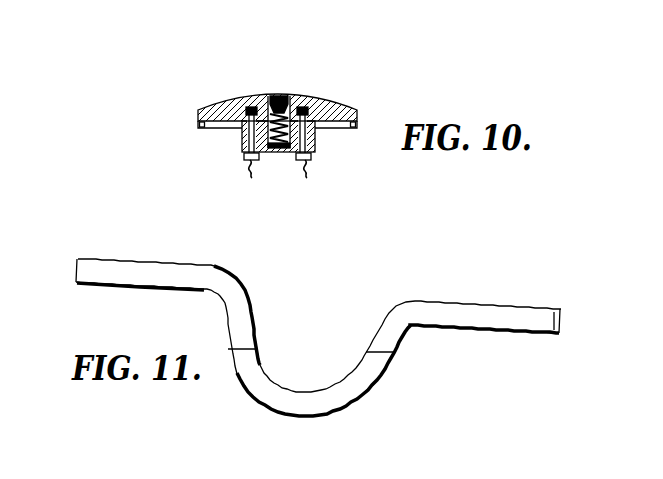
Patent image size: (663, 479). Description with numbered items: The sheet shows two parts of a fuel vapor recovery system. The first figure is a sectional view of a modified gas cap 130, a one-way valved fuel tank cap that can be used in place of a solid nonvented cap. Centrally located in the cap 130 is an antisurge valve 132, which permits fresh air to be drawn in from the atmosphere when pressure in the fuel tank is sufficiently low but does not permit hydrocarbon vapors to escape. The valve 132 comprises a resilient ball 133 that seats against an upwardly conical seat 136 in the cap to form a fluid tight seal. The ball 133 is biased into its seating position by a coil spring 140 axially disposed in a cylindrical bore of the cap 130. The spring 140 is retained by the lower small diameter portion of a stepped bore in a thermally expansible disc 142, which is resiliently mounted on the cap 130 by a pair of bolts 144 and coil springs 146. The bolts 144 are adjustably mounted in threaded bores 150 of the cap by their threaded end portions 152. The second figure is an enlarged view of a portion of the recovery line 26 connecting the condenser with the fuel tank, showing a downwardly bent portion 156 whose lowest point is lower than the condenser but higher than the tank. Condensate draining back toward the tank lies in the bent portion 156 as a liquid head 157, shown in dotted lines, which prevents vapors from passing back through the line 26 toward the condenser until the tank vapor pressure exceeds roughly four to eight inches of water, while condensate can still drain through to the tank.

In FIG. 11, the recovery line 26 is at (517, 303).
In FIG. 10, the gas cap 130 is at (312, 95).
In FIG. 10, the antisurge valve 132 is at (277, 91).
In FIG. 10, the resilient ball 133 is at (282, 100).
In FIG. 10, the upwardly conical seat 136 is at (270, 93).
In FIG. 10, the coil spring 140 is at (284, 151).
In FIG. 10, the thermally expansible disc 142 is at (238, 139).
In FIG. 10, the bolts 144 is at (320, 168).
In FIG. 10, the coil springs 146 is at (243, 155).
In FIG. 10, the threaded bores 150 is at (214, 102).
In FIG. 10, the threaded end portions 152 is at (308, 111).
In FIG. 11, the downwardly bent portion 156 is at (267, 418).
In FIG. 11, the liquid head 157 is at (256, 340).